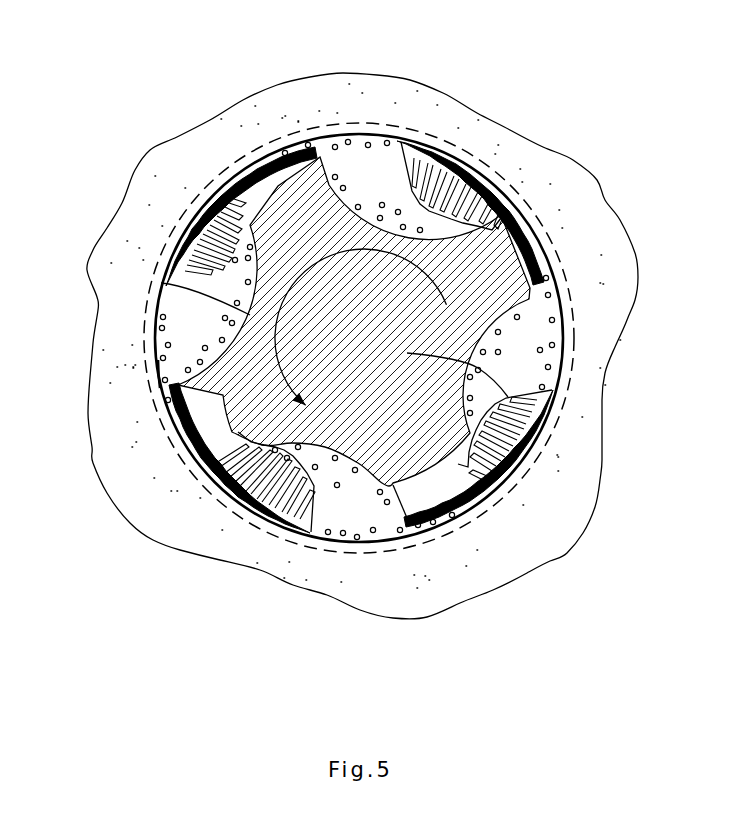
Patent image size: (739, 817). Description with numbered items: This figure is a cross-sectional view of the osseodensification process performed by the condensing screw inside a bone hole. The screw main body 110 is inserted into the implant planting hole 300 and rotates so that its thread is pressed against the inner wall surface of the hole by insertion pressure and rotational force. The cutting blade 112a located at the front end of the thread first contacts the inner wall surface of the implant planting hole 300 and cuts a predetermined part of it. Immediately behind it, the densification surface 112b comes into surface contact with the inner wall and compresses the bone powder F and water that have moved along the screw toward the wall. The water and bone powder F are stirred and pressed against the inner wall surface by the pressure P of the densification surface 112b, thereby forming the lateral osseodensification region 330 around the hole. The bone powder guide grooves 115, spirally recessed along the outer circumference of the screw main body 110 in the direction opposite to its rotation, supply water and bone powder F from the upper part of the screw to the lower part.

The implant planting hole 300 is at (373, 134).
The lateral osseodensification region 330 is at (542, 225).
The screw main body 110 is at (547, 428).
The bone powder guide groove 115 is at (235, 312).
The cutting blade 112a is at (197, 447).
The densification surface 112b is at (213, 482).
The bone powder F is at (158, 375).
The pressure P is at (268, 180).